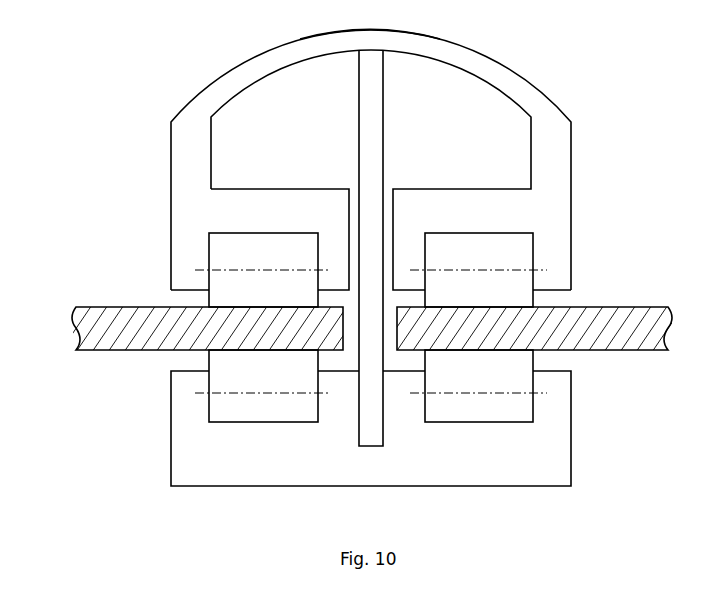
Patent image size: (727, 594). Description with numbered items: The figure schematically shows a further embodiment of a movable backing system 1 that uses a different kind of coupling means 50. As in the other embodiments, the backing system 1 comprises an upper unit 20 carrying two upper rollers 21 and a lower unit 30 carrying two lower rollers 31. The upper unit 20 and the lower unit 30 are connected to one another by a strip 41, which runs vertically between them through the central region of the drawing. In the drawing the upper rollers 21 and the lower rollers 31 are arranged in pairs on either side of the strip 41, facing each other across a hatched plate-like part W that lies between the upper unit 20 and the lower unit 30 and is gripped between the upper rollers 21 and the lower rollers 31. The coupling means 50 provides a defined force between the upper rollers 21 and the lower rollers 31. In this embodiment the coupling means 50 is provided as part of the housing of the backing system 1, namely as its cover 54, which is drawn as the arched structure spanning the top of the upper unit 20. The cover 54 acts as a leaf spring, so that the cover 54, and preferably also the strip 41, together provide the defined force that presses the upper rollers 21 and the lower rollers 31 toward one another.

The movable backing system 1 is at (590, 96).
The upper unit 20 is at (187, 240).
The upper rollers 21 is at (215, 280).
The lower unit 30 is at (205, 435).
The lower rollers 31 is at (205, 378).
The strip 41 is at (397, 230).
The coupling means 50 is at (205, 107).
The cover 54 is at (315, 52).
The workpiece wall W is at (113, 326).